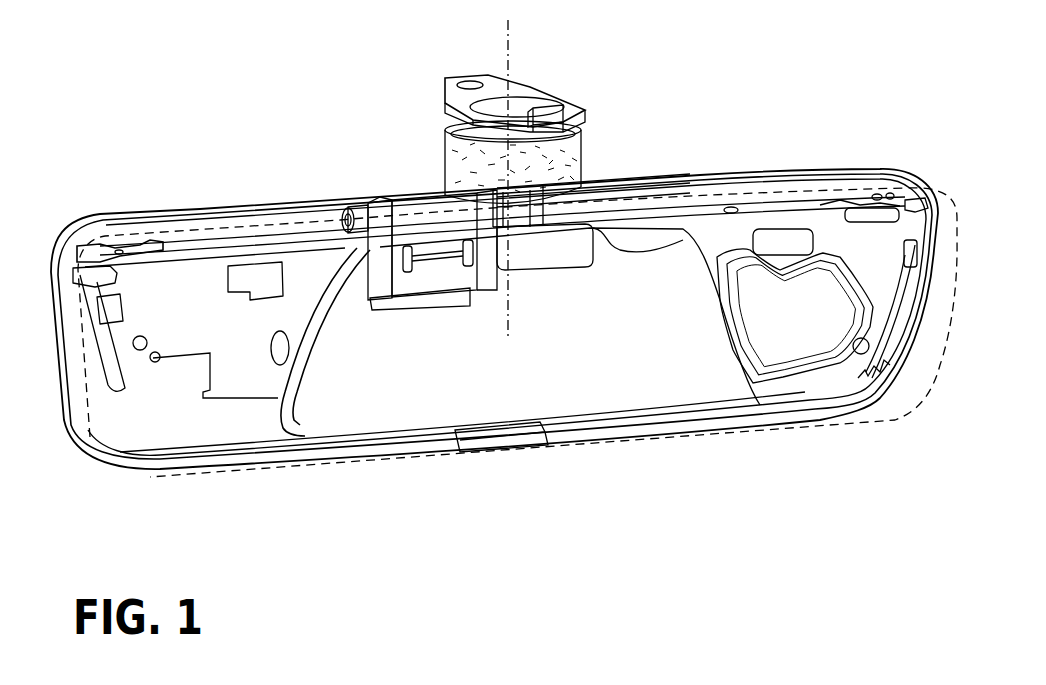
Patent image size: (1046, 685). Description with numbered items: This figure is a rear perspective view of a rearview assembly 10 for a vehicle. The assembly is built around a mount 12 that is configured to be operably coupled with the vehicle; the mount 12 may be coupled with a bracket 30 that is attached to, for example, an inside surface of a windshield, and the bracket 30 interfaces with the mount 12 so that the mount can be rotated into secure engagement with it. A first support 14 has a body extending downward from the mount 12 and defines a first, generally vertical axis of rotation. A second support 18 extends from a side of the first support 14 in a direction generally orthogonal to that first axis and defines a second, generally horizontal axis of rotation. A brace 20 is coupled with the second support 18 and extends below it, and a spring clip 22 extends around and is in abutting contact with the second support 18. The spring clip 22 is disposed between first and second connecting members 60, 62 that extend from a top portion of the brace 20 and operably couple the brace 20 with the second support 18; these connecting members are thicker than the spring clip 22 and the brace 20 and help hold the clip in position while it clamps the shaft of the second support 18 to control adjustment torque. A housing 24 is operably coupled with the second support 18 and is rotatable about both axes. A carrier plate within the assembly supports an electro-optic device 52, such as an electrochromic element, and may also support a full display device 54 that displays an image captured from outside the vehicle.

The rearview assembly 10 is at (778, 133).
The mount 12 is at (572, 172).
The first support 14 is at (598, 182).
The second support 18 is at (336, 207).
The brace 20 is at (624, 356).
The spring clip 22 is at (412, 228).
The housing 24 is at (939, 378).
The bracket 30 is at (530, 92).
The electro-optic device 52 is at (855, 183).
The full display device 54 is at (887, 378).
The first connecting member 60 is at (382, 207).
The second connecting member 62 is at (410, 240).